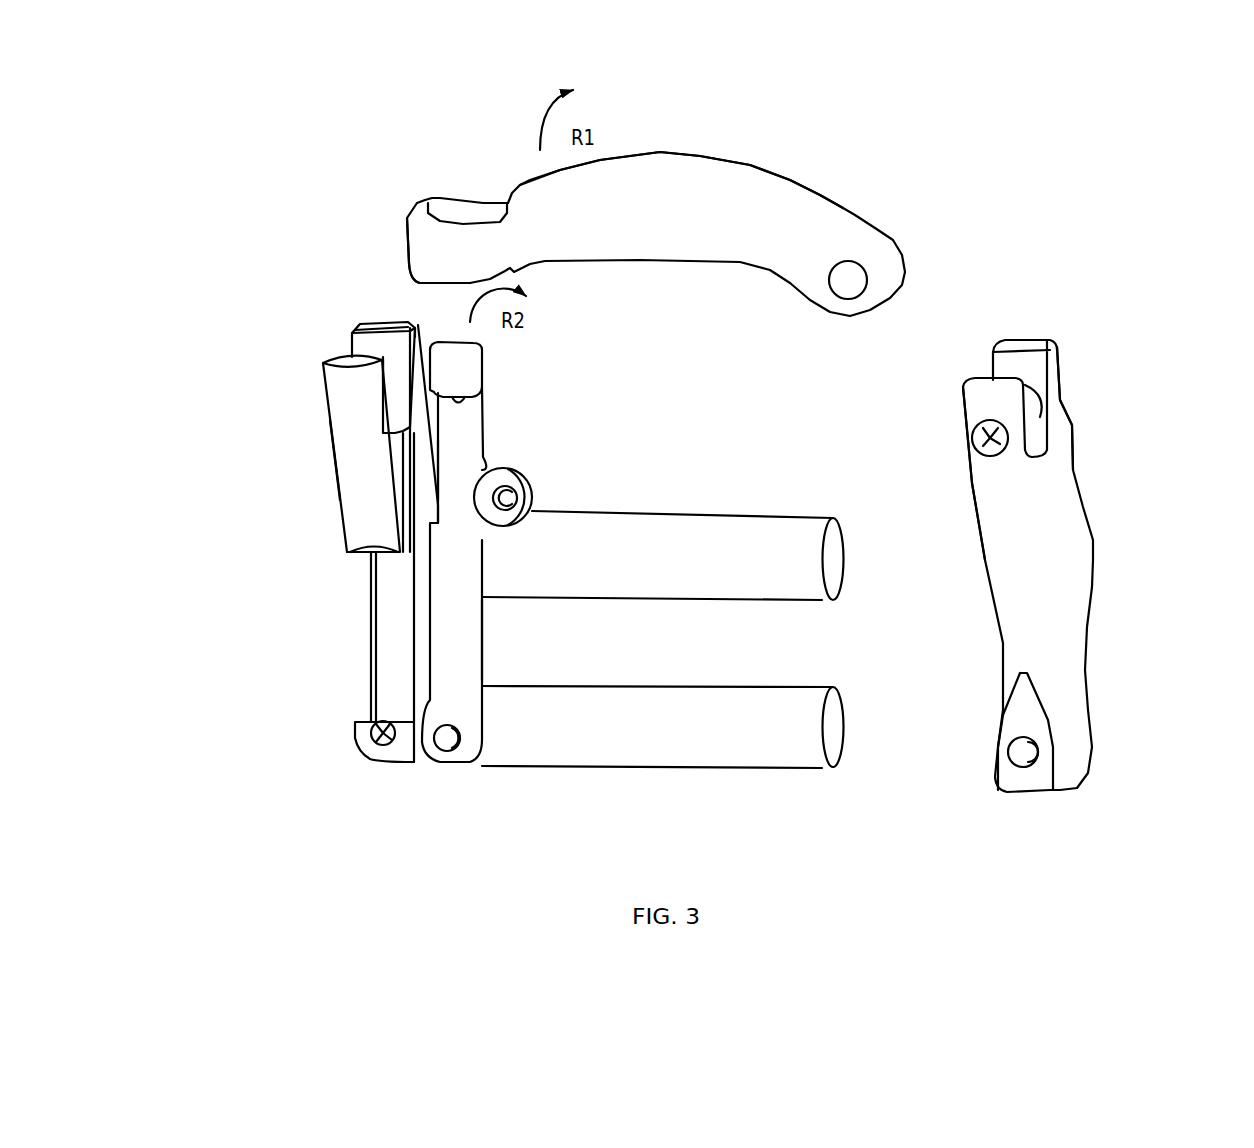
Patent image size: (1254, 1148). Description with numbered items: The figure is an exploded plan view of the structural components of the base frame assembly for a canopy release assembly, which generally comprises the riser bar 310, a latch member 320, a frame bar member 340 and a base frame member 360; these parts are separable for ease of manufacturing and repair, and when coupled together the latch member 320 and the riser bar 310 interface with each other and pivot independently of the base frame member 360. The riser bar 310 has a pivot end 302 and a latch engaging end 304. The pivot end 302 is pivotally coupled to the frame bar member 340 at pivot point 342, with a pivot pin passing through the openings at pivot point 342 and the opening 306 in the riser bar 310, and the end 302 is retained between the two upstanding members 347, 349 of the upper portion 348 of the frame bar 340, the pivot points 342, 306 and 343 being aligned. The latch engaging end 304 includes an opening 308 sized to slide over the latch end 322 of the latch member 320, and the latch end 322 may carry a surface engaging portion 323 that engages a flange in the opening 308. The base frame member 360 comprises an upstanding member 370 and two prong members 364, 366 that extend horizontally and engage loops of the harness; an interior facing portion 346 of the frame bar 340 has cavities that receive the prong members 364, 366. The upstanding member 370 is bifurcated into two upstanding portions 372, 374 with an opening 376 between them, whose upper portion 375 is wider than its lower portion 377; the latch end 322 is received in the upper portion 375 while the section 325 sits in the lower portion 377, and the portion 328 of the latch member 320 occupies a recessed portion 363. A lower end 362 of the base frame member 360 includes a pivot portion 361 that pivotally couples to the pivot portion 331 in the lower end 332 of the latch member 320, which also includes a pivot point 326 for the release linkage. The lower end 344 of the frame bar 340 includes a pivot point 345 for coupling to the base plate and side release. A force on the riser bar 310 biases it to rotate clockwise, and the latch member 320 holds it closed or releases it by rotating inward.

The pivot end 302 is at (907, 272).
The latch engaging end 304 is at (407, 245).
The opening 306 is at (848, 283).
The opening 308 is at (455, 208).
The riser bar 310 is at (843, 207).
The latch member 320 is at (462, 605).
The latch end 322 is at (458, 363).
The surface engaging portion 323 is at (477, 395).
The section 325 is at (467, 458).
The pivot point 326 is at (510, 497).
The portion 328 is at (460, 648).
The pivot portion 331 is at (447, 743).
The lower end 332 is at (457, 763).
The frame bar member 340 is at (1080, 505).
The pivot point 342 is at (988, 436).
The pivot point 343 is at (1037, 400).
The lower end 344 is at (1068, 790).
The pivot point 345 is at (1015, 757).
The interior facing portion 346 is at (970, 510).
The upstanding member 347 is at (1023, 337).
The upper portion 348 is at (1072, 427).
The upstanding member 349 is at (962, 381).
The base frame member 360 is at (358, 498).
The pivot portion 361 is at (384, 733).
The lower end 362 is at (367, 755).
The recessed portion 363 is at (368, 603).
The prong member 364 is at (730, 597).
The prong member 366 is at (753, 767).
The upstanding member 370 is at (337, 462).
The upstanding portion 372 is at (322, 367).
The upstanding portion 374 is at (357, 325).
The upper portion 375 is at (400, 373).
The opening 376 is at (325, 343).
The lower portion 377 is at (410, 465).